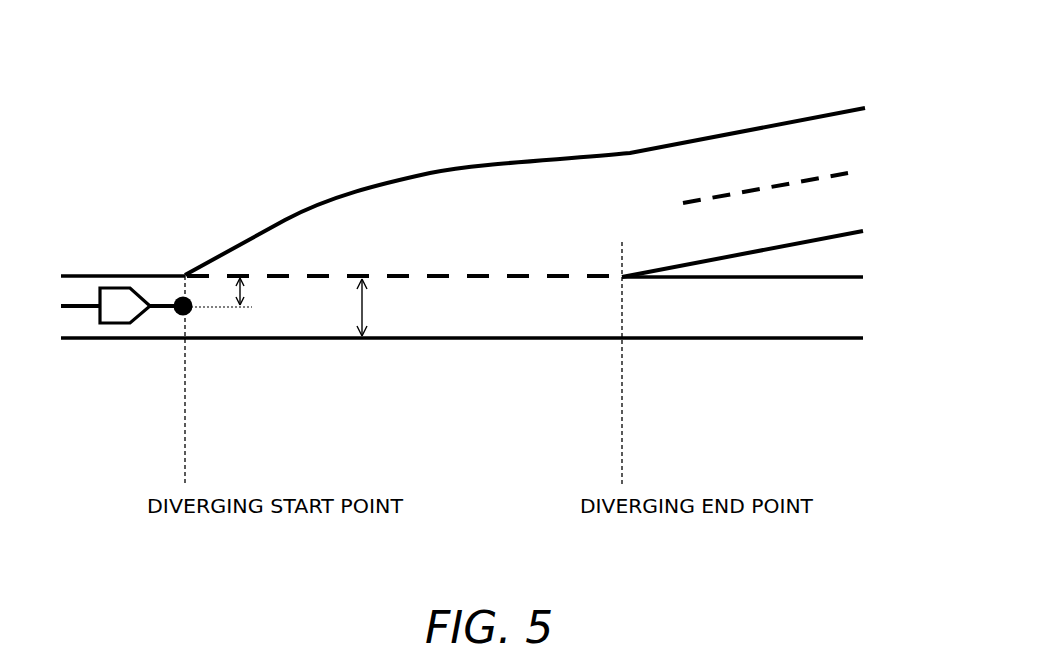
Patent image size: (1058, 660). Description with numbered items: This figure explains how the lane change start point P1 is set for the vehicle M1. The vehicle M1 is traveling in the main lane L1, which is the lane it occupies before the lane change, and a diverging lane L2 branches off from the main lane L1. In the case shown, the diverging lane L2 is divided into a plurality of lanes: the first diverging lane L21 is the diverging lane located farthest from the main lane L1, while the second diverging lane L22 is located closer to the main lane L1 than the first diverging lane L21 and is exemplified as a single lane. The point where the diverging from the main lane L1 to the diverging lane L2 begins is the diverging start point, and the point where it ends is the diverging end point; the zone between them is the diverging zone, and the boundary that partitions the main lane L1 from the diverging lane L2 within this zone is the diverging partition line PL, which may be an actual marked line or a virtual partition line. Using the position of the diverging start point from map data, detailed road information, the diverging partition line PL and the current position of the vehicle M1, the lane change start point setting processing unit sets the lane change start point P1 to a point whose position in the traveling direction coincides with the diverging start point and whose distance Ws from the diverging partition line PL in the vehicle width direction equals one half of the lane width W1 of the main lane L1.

The main lane L1 is at (88, 347).
The diverging lane L2 is at (512, 155).
The first diverging lane L21 is at (830, 142).
The second diverging lane L22 is at (843, 222).
The vehicle M1 is at (120, 288).
The lane change start point P1 is at (190, 312).
The diverging partition line PL is at (488, 277).
The distance from the diverging partition line Ws is at (240, 296).
The lane width W1 is at (387, 307).